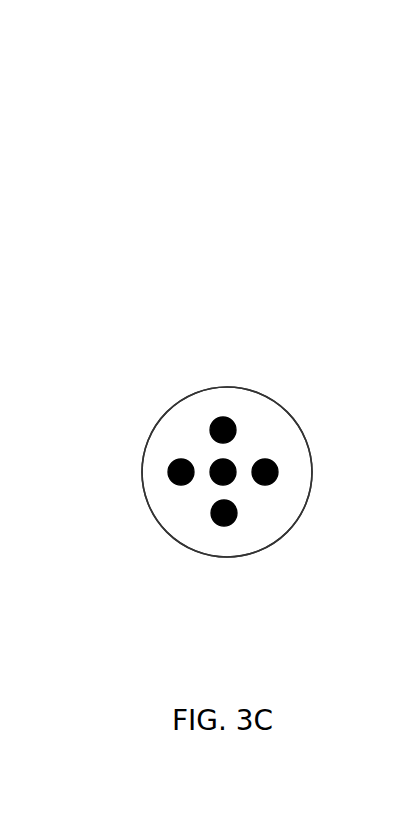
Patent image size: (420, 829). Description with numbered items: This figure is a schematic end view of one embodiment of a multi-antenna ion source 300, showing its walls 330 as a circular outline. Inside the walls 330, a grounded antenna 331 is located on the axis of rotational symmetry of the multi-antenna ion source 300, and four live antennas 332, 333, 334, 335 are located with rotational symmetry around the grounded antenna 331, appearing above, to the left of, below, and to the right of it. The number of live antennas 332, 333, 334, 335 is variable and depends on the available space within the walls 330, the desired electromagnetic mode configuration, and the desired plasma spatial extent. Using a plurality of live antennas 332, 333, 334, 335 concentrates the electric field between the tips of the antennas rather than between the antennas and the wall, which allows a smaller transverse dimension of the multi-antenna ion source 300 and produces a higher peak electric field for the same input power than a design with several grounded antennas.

The multi-antenna ion source 300 is at (225, 220).
The walls 330 is at (148, 443).
The grounded antenna 331 is at (233, 467).
The live antenna 332 is at (223, 417).
The live antenna 333 is at (172, 472).
The live antenna 334 is at (223, 524).
The live antenna 335 is at (277, 473).